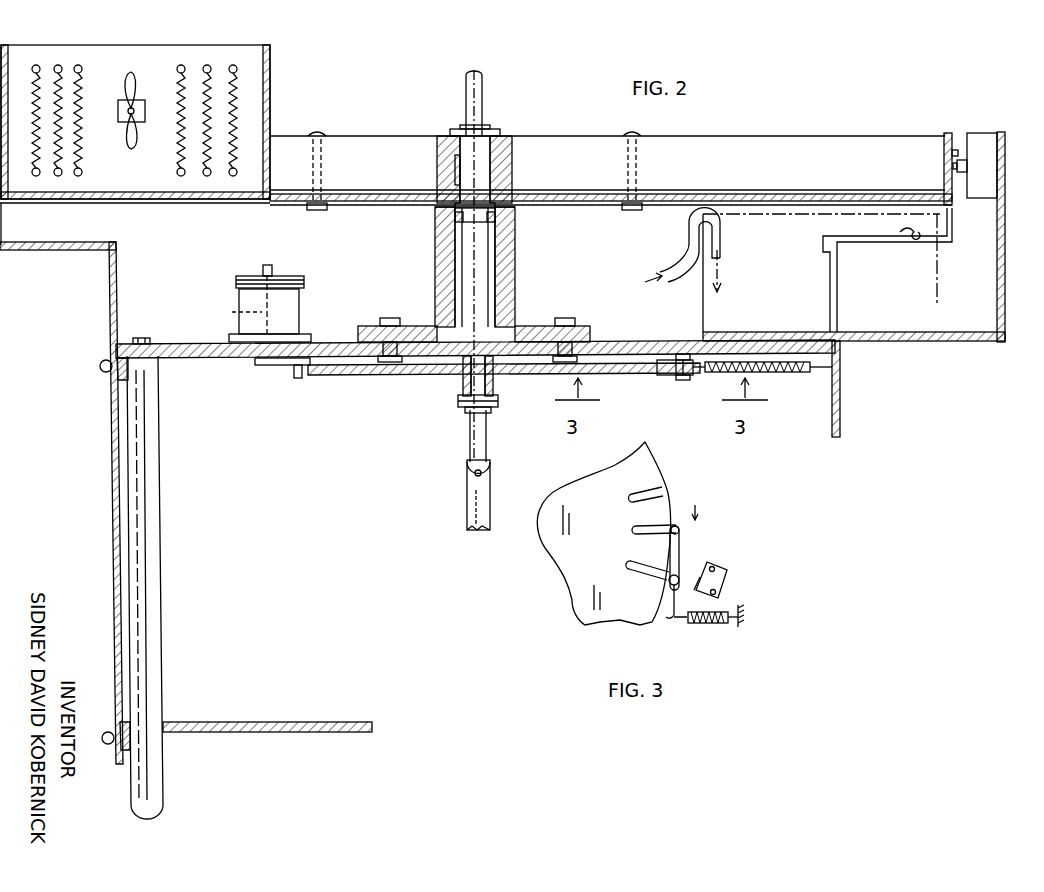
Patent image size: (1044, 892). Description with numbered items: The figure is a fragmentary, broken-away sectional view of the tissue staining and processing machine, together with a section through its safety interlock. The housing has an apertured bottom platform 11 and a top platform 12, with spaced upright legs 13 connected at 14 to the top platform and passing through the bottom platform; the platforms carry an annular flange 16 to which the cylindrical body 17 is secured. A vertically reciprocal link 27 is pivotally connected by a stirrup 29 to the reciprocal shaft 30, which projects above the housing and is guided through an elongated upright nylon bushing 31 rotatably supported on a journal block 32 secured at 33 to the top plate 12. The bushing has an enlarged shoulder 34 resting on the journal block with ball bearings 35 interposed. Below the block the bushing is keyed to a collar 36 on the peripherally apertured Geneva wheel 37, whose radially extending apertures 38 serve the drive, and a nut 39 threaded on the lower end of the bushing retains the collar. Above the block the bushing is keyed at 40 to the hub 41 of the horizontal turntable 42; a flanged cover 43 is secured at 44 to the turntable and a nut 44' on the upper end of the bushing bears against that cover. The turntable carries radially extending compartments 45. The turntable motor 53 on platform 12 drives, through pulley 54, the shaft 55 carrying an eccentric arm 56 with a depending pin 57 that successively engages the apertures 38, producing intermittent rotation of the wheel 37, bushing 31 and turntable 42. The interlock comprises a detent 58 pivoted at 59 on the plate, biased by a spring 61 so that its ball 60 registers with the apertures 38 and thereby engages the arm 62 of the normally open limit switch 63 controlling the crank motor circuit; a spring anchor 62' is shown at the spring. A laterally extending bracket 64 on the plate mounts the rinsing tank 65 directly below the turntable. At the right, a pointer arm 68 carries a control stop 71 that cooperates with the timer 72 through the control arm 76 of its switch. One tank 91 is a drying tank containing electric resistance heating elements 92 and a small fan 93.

In FIG. 2, the apertured bottom platform 11 is at (185, 721).
In FIG. 2, the top platform 12 is at (195, 360).
In FIG. 2, the upright legs 13 is at (162, 575).
In FIG. 2, the leg connection 14 is at (147, 338).
In FIG. 2, the annular flange 16 is at (118, 372).
In FIG. 2, the cylindrical body 17 is at (112, 625).
In FIG. 2, the vertically reciprocal link 27 is at (478, 532).
In FIG. 2, the stirrup 29 is at (467, 470).
In FIG. 2, the reciprocal shaft 30 is at (484, 90).
In FIG. 2, the upright bushing 31 is at (468, 418).
In FIG. 2, the journal block 32 is at (437, 285).
In FIG. 2, the journal block securing point 33 is at (383, 318).
In FIG. 2, the enlarged shoulder 34 is at (496, 225).
In FIG. 2, the ball bearings 35 is at (436, 238).
In FIG. 2, the collar 36 is at (462, 388).
In FIG. 2, the peripherally apertured wheel 37 is at (325, 378).
In FIG. 3, the peripherally apertured wheel 37 is at (627, 613).
In FIG. 2, the radially extending apertures 38 is at (438, 315).
In FIG. 3, the radially extending apertures 38 is at (660, 488).
In FIG. 2, the nut 39 is at (500, 398).
In FIG. 2, the key 40 is at (438, 145).
In FIG. 2, the hub 41 is at (440, 170).
In FIG. 2, the turntable 42 is at (862, 115).
In FIG. 2, the flanged cover 43 is at (660, 136).
In FIG. 2, the cover securing point 44 is at (333, 158).
In FIG. 2, the nut 44' is at (499, 123).
In FIG. 2, the compartments 45 is at (950, 133).
In FIG. 2, the turntable motor 53 is at (299, 300).
In FIG. 2, the pulley 54 is at (257, 275).
In FIG. 2, the shaft 55 is at (229, 313).
In FIG. 2, the eccentric arm 56 is at (280, 366).
In FIG. 2, the depending pin 57 is at (300, 380).
In FIG. 2, the detent 58 is at (665, 376).
In FIG. 3, the detent 58 is at (680, 548).
In FIG. 2, the detent pivot 59 is at (683, 376).
In FIG. 3, the detent pivot 59 is at (670, 575).
In FIG. 3, the ball 60 is at (680, 532).
In FIG. 2, the spring 61 is at (788, 375).
In FIG. 3, the spring 61 is at (700, 624).
In FIG. 3, the switch arm 62 is at (717, 601).
In FIG. 3, the spring anchor 62' is at (751, 630).
In FIG. 3, the limit switch 63 is at (725, 580).
In FIG. 2, the bracket 64 is at (920, 342).
In FIG. 2, the rinsing tank 65 is at (700, 302).
In FIG. 2, the pointer arm 68 is at (952, 152).
In FIG. 2, the control stop 71 is at (975, 160).
In FIG. 2, the timer 72 is at (981, 207).
In FIG. 2, the control arm 76 is at (965, 162).
In FIG. 2, the tank 91 is at (272, 78).
In FIG. 2, the electric resistance heating elements 92 is at (82, 82).
In FIG. 2, the fan 93 is at (140, 80).